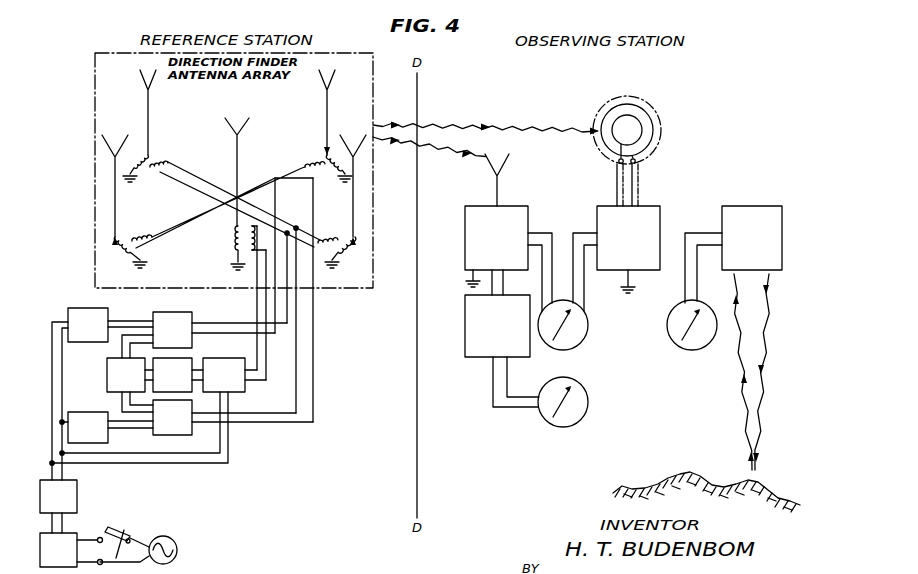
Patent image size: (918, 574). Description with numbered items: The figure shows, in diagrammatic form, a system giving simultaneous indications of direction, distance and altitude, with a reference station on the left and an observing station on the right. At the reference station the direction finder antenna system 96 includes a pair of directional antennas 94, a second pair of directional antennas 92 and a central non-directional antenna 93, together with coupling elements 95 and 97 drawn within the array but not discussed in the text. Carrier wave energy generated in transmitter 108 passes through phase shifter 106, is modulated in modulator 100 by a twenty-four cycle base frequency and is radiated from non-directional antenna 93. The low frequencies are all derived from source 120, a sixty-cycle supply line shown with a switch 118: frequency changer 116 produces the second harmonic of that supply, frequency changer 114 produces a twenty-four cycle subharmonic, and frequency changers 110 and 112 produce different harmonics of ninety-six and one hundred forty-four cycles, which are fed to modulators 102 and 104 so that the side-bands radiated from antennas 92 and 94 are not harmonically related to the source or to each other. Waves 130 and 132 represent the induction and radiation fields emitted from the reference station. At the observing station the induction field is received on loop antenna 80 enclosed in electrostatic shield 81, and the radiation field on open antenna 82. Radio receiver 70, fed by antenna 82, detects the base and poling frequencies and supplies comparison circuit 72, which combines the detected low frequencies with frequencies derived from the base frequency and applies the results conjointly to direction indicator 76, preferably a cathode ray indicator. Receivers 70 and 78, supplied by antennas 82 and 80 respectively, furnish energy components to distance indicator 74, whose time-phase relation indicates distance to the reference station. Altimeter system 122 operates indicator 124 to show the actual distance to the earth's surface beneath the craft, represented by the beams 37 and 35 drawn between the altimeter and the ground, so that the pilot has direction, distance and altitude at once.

The antenna system 96 is at (95, 70).
The antennas 94 is at (142, 74).
The antennas 92 is at (329, 72).
The non-directional antenna 93 is at (237, 156).
The coupling coil 95 is at (155, 160).
The coupling transformer 97 is at (236, 245).
The frequency changer 110 is at (80, 308).
The modulator 104 is at (180, 305).
The transmitter 108 is at (107, 372).
The phase shifter 106 is at (191, 358).
The modulator 100 is at (237, 392).
The modulator 102 is at (152, 435).
The frequency changer 112 is at (99, 412).
The frequency changer 114 is at (77, 494).
The frequency changer 116 is at (71, 553).
The switch 118 is at (124, 550).
The source 120 is at (169, 555).
The wave 130 is at (522, 129).
The wave 132 is at (448, 153).
The open antenna 82 is at (510, 148).
The electrostatic shield 81 is at (656, 118).
The loop antenna 80 is at (641, 138).
The radio receiver 70 is at (528, 218).
The radio receiver 78 is at (660, 218).
The altimeter system 122 is at (745, 206).
The comparison circuit 72 is at (466, 346).
The distance indicator 74 is at (588, 313).
The indicator 124 is at (680, 306).
The direction indicator 76 is at (546, 421).
The reflected altimeter wave 37 is at (744, 433).
The transmitted altimeter wave 35 is at (760, 428).